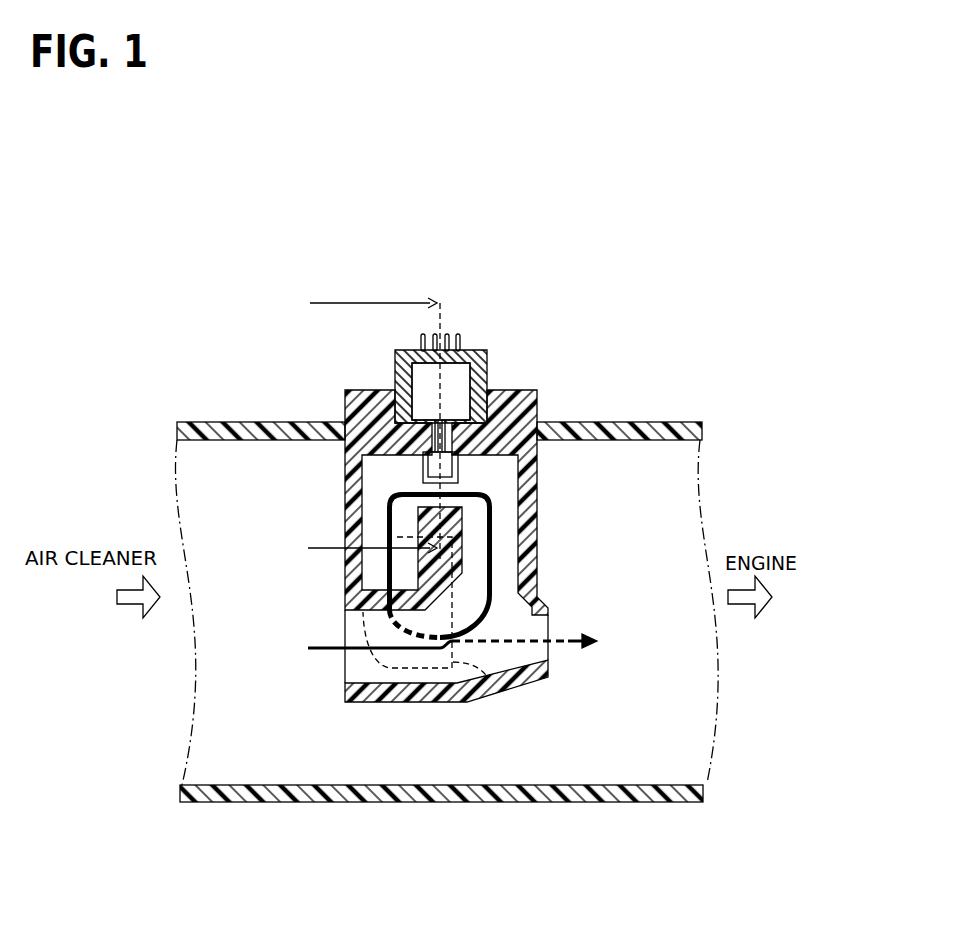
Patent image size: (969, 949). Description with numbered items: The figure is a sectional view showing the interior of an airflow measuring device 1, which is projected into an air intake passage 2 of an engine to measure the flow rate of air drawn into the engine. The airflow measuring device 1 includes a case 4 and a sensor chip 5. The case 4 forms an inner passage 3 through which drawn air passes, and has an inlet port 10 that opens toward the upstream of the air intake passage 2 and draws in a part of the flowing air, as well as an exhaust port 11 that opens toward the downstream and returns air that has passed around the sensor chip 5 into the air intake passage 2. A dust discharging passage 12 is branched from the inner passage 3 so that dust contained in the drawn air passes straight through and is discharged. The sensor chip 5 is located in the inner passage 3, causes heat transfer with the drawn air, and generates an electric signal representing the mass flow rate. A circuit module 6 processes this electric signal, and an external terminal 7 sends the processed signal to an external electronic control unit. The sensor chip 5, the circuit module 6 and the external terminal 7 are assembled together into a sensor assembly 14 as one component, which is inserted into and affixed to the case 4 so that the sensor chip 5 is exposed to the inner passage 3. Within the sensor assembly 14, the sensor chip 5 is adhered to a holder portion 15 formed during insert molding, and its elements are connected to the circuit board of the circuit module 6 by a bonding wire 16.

The airflow measuring device 1 is at (601, 310).
The air intake passage 2 is at (677, 452).
The inner passage 3 is at (503, 532).
The case 4 is at (540, 411).
The sensor chip 5 is at (427, 478).
The circuit module 6 is at (462, 375).
The external terminal 7 is at (443, 348).
The inlet port 10 is at (344, 662).
The exhaust port 11 is at (497, 680).
The dust discharging passage 12 is at (522, 612).
The sensor assembly 14 is at (392, 373).
The holder portion 15 is at (436, 468).
The bonding wire 16 is at (483, 461).